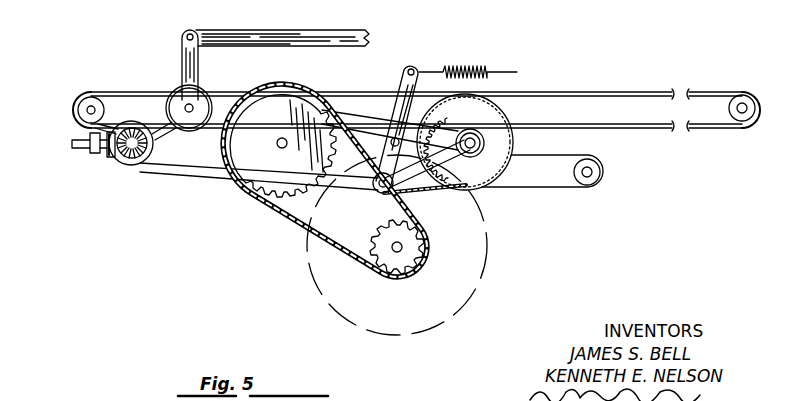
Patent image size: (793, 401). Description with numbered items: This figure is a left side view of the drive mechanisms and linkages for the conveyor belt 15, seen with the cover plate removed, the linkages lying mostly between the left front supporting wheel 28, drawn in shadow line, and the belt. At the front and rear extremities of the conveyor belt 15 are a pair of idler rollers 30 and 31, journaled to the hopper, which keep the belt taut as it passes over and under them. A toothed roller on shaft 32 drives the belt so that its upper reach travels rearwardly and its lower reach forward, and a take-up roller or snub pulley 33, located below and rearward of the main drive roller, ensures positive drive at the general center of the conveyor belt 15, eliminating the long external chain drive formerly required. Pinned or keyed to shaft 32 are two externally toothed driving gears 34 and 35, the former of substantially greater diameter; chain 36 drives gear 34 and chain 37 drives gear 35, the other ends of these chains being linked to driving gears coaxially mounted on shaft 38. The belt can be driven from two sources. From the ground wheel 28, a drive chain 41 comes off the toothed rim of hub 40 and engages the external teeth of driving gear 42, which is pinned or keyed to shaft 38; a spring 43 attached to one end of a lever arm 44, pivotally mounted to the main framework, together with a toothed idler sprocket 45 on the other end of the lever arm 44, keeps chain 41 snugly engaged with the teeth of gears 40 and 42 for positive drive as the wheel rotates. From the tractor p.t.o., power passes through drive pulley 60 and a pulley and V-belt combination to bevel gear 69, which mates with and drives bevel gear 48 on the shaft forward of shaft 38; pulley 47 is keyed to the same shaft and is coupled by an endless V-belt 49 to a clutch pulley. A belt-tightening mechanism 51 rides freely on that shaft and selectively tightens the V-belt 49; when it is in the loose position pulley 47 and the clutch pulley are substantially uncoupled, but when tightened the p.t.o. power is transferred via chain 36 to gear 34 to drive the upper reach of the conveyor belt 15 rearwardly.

The conveyor belt 15 is at (620, 92).
The left front supporting wheel 28 is at (488, 281).
The idler roller 30 is at (80, 105).
The idler roller 31 is at (730, 98).
The shaft 32 is at (482, 158).
The snub pulley 33 is at (587, 186).
The driving gear 34 is at (482, 112).
The driving gear 35 is at (485, 143).
The chain 36 is at (503, 177).
The chain 37 is at (333, 110).
The shaft 38 is at (281, 138).
The hub 40 is at (382, 226).
The drive chain 41 is at (288, 220).
The driving gear 42 is at (296, 181).
The spring 43 is at (460, 68).
The lever arm 44 is at (405, 72).
The toothed idler sprocket 45 is at (400, 196).
The pulley 47 is at (134, 120).
The bevel gear 48 is at (126, 160).
The endless V-belt 49 is at (145, 166).
The belt-tightening mechanism 51 is at (172, 75).
The drive pulley 60 is at (88, 137).
The bevel gear 69 is at (110, 155).